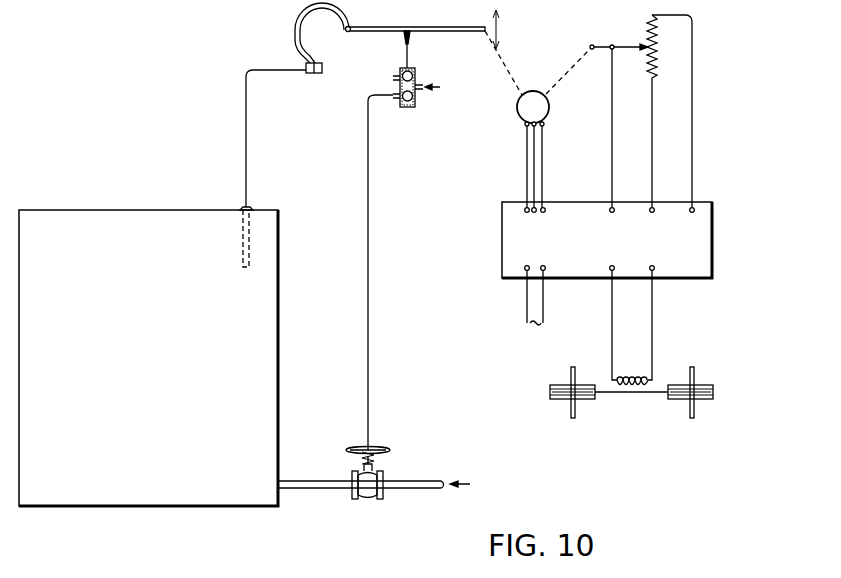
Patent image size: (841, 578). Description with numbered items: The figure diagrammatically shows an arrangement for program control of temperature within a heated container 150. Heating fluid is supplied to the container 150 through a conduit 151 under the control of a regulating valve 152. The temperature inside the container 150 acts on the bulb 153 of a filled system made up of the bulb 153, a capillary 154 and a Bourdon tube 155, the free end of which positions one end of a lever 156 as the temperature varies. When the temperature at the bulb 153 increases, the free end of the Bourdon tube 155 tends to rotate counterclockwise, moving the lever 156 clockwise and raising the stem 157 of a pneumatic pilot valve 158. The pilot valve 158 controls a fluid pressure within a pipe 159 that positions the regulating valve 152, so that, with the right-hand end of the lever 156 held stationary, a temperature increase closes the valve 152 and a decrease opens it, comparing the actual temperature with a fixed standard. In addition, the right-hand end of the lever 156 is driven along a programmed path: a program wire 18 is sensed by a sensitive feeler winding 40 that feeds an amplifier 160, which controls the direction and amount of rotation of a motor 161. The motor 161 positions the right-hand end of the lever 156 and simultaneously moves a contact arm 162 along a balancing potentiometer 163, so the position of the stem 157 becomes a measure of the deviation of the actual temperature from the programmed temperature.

The program wire 18 is at (615, 392).
The sensitive feeler winding 40 is at (632, 327).
The heated container 150 is at (152, 379).
The conduit 151 is at (311, 488).
The regulating valve 152 is at (375, 492).
The bulb 153 is at (243, 258).
The capillary 154 is at (247, 150).
The Bourdon tube 155 is at (292, 27).
The lever 156 is at (371, 27).
The stem 157 is at (410, 57).
The pneumatic pilot valve 158 is at (414, 107).
The pipe 159 is at (371, 343).
The amplifier 160 is at (607, 263).
The motor 161 is at (516, 104).
The contact arm 162 is at (632, 44).
The balancing potentiometer 163 is at (651, 66).